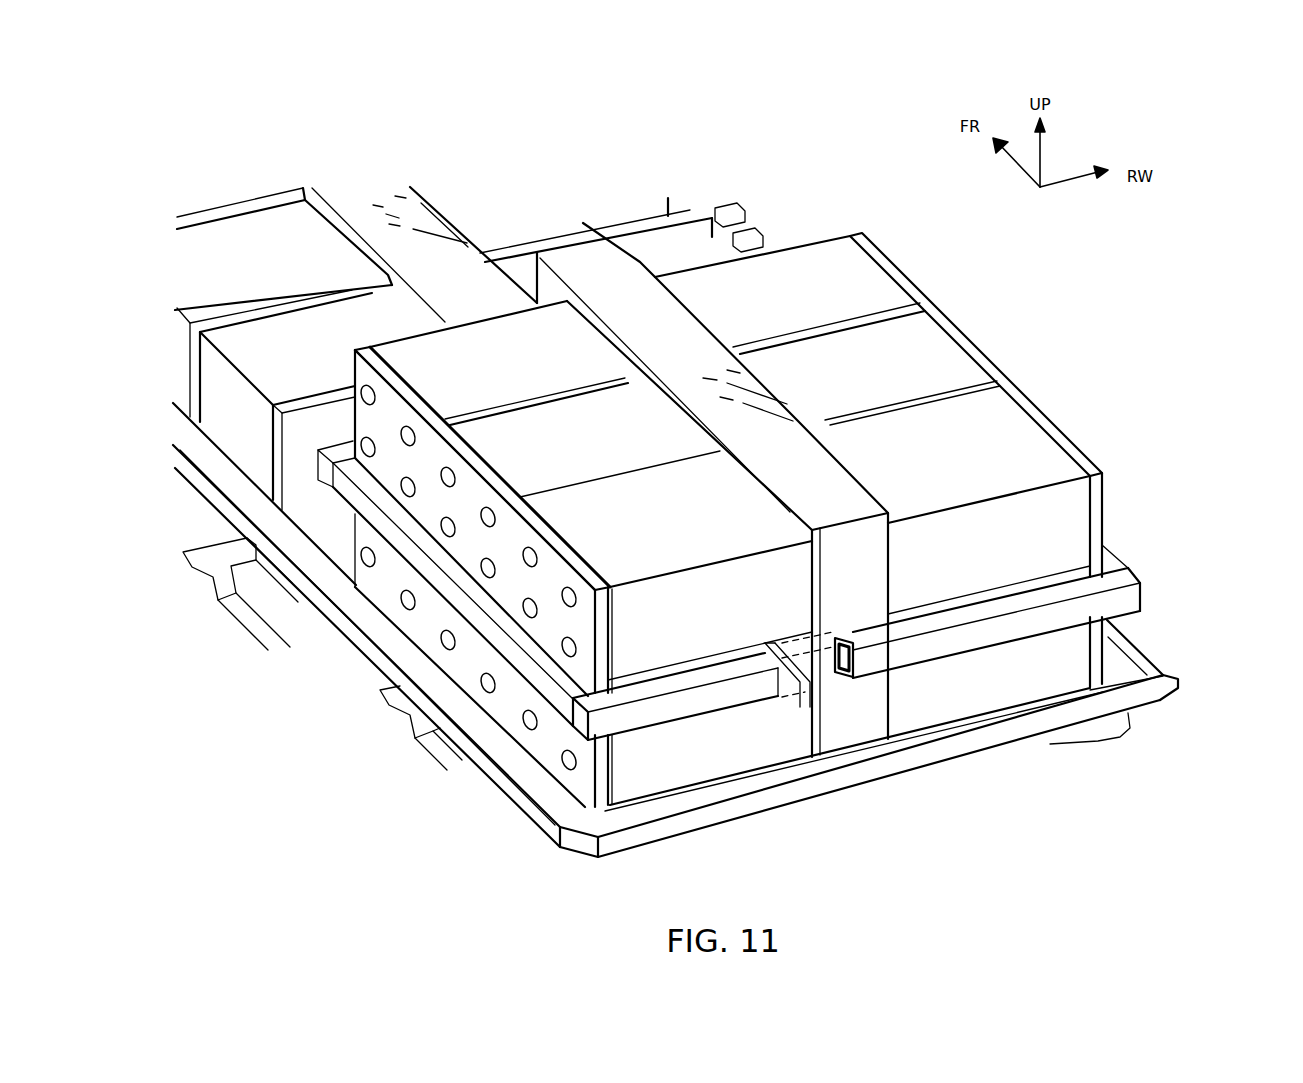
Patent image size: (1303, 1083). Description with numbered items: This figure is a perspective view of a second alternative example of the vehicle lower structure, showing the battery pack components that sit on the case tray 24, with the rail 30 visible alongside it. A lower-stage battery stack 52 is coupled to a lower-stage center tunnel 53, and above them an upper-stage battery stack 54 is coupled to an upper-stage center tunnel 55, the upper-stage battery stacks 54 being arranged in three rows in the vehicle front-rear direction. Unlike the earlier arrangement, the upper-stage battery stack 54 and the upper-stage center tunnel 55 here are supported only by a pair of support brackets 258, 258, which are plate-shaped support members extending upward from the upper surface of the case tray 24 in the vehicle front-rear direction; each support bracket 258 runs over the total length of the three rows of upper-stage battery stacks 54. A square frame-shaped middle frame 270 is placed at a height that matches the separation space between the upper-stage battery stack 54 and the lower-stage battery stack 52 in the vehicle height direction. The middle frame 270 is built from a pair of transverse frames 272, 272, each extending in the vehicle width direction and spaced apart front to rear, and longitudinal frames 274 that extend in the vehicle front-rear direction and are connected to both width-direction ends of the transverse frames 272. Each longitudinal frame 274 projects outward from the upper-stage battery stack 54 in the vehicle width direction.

The case tray 24 is at (1097, 747).
The rail 30 is at (200, 590).
The lower-stage battery stack 52 is at (990, 687).
The lower-stage center tunnel 53 is at (857, 723).
The upper-stage battery stack 54 is at (1015, 433).
The upper-stage center tunnel 55 is at (578, 258).
The support bracket 258 is at (962, 330).
The middle frame 270 is at (405, 565).
The transverse frame 272 is at (1128, 603).
The longitudinal frame 274 is at (360, 500).